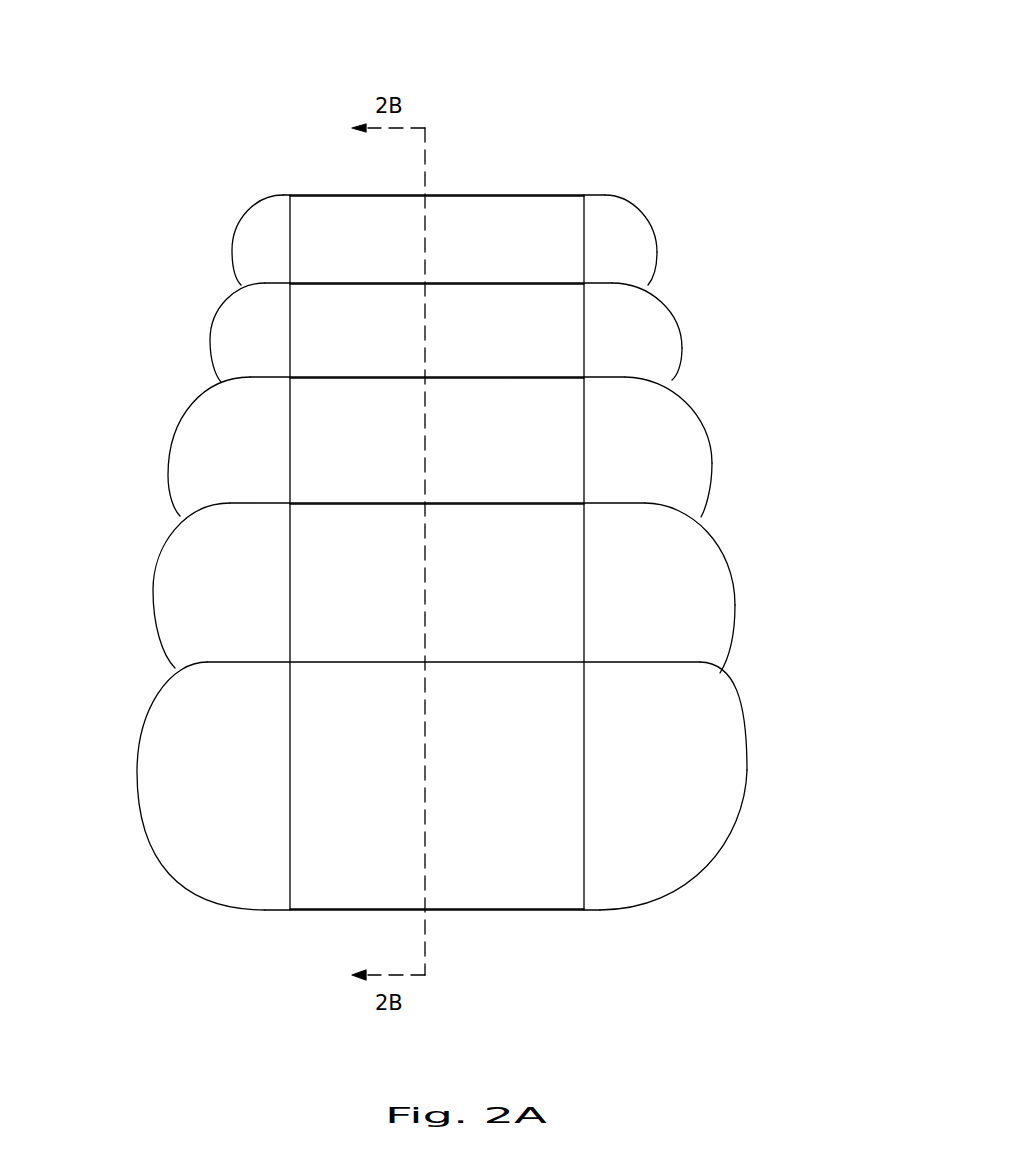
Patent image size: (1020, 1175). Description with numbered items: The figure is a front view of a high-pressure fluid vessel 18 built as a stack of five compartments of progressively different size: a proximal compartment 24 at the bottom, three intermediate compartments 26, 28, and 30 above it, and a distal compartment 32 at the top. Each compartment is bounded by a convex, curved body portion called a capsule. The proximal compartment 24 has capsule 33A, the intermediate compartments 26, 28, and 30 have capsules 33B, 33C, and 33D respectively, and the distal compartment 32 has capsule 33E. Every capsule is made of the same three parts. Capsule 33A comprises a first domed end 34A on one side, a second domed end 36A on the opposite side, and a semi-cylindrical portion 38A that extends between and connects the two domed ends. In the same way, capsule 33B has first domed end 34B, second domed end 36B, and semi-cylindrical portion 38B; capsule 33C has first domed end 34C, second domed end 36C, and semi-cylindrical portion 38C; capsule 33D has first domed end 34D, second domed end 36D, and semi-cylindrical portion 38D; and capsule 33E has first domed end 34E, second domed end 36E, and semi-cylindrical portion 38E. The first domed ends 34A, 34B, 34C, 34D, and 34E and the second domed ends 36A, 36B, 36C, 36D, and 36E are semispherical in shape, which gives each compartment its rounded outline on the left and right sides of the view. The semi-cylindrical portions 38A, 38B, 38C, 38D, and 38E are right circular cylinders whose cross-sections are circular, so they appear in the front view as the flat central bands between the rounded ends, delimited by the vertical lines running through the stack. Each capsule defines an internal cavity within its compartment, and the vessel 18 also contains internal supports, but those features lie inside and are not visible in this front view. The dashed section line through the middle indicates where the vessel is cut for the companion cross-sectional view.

The high-pressure fluid vessel 18 is at (140, 85).
The proximal compartment 24 is at (470, 828).
The intermediate compartment 26 is at (458, 604).
The intermediate compartment 28 is at (457, 440).
The intermediate compartment 30 is at (456, 305).
The distal compartment 32 is at (440, 178).
The capsule 33A is at (710, 710).
The capsule 33B is at (700, 568).
The capsule 33C is at (657, 422).
The capsule 33D is at (648, 312).
The capsule 33E is at (537, 220).
The first domed end 34A is at (723, 838).
The first domed end 34B is at (735, 610).
The first domed end 34C is at (712, 463).
The first domed end 34D is at (682, 350).
The first domed end 34E is at (620, 197).
The second domed end 36A is at (140, 803).
The second domed end 36B is at (153, 592).
The second domed end 36C is at (168, 482).
The second domed end 36D is at (210, 340).
The second domed end 36E is at (232, 243).
The semi-cylindrical portion 38A is at (497, 872).
The semi-cylindrical portion 38B is at (323, 609).
The semi-cylindrical portion 38C is at (345, 452).
The semi-cylindrical portion 38D is at (345, 328).
The semi-cylindrical portion 38E is at (447, 217).